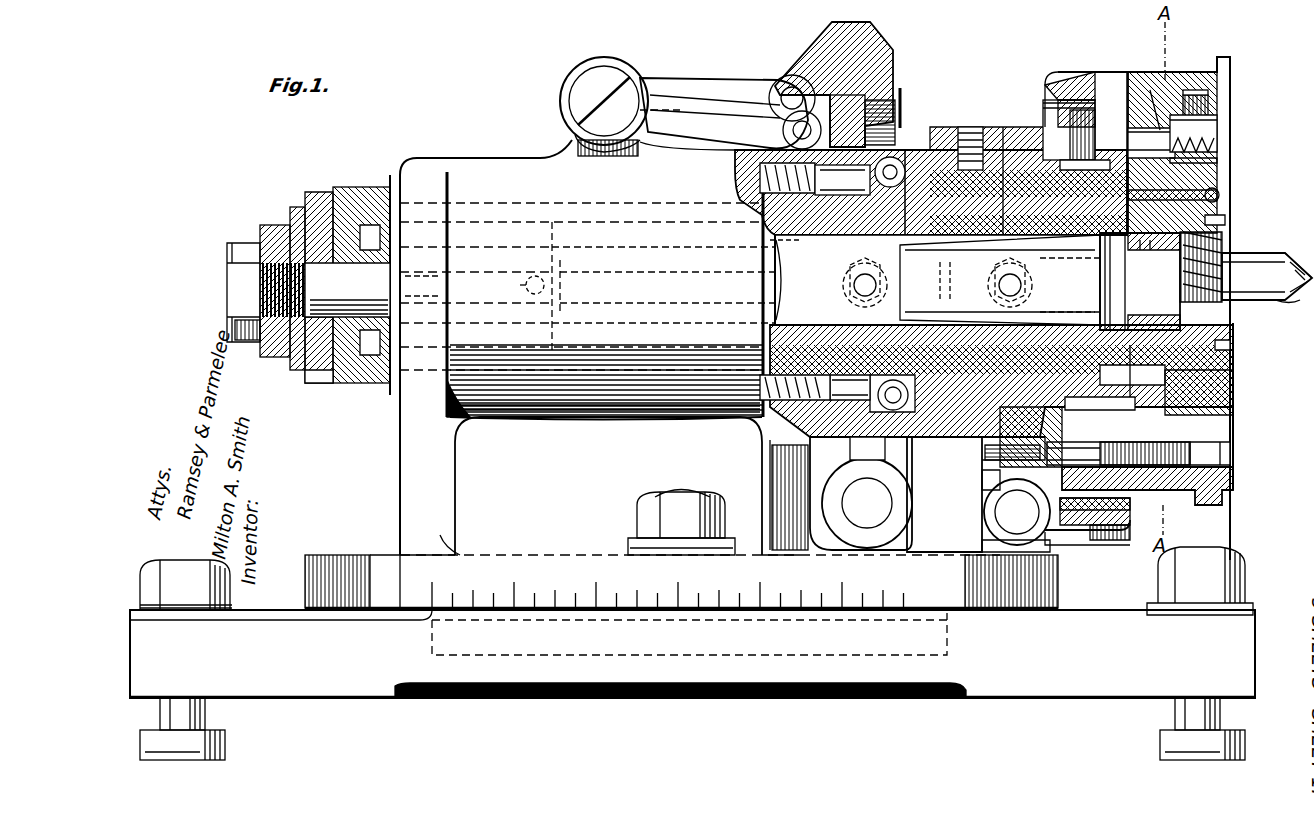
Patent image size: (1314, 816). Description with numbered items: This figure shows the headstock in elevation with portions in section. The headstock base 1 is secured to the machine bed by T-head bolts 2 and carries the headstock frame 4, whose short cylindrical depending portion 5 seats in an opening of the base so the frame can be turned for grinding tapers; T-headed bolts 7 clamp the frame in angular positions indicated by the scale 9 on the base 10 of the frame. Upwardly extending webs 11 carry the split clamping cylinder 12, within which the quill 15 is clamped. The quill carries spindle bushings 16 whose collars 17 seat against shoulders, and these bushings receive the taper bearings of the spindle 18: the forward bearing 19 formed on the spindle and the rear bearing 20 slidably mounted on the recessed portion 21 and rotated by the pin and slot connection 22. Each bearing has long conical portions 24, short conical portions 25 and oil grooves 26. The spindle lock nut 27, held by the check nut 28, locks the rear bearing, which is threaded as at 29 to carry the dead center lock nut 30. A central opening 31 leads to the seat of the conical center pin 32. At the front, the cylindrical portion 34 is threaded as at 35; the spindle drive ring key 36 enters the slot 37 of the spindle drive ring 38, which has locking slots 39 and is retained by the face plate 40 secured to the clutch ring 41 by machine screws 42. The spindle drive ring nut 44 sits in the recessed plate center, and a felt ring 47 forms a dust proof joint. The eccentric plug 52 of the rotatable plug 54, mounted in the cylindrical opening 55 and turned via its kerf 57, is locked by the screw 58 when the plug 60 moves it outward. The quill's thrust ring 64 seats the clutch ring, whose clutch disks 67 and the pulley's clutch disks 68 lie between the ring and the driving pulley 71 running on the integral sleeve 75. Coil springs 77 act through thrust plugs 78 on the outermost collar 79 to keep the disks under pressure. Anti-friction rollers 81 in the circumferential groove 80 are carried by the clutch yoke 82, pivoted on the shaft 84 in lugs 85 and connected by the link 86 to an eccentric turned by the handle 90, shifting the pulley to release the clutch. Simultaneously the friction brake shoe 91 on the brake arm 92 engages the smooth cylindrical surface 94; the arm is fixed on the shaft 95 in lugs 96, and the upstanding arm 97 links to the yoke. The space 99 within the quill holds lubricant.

The headstock base 1 is at (345, 695).
The T-head bolts 2 is at (190, 718).
The headstock frame 4 is at (470, 532).
The short cylindrical depending portion 5 is at (622, 655).
The T-headed bolts 7 is at (678, 492).
The scale 9 is at (537, 598).
The base of the headstock frame 10 is at (537, 560).
The upwardly extending webs 11 is at (405, 480).
The split clamping cylinder 12 is at (568, 410).
The quill 15 is at (965, 127).
The spindle bushings 16 is at (1043, 108).
The collars 17 is at (1130, 195).
The spindle 18 is at (937, 280).
The forward bearing 19 is at (1000, 280).
The rear bearing 20 is at (392, 385).
The recessed portion 21 is at (347, 290).
The pin and slot connection 22 is at (631, 286).
The long conical portions 24 is at (1035, 285).
The short conical portions 25 is at (1110, 248).
The oil grooves 26 is at (1105, 320).
The spindle lock nut 27 is at (295, 207).
The check nut 28 is at (240, 288).
The thread on rear bearing 29 is at (282, 225).
The dead center lock nut 30 is at (325, 383).
The central opening 31 is at (422, 288).
The conical center pin 32 is at (1262, 302).
The cylindrical portion 34 is at (1195, 262).
The threaded portion 35 is at (1215, 277).
The spindle drive ring key 36 is at (1175, 258).
The slot 37 is at (1156, 251).
The spindle drive ring 38 is at (1175, 380).
The locking slots 39 is at (1175, 402).
The face plate 40 is at (1210, 482).
The clutch ring 41 is at (1178, 490).
The machine screws 42 is at (1228, 453).
The spindle drive ring nut 44 is at (1215, 348).
The felt ring 47 is at (1220, 198).
The eccentric plug 52 is at (1146, 135).
The rotatable plug 54 is at (1215, 122).
The cylindrical opening 55 is at (1185, 95).
The kerf 57 is at (1222, 140).
The screw 58 is at (1225, 75).
The plug 60 is at (1100, 80).
The thrust ring 64 is at (1230, 418).
The clutch disks 67 is at (1060, 165).
The clutch disks 68 is at (1060, 88).
The driving pulley 71 is at (922, 435).
The integral sleeve 75 is at (998, 127).
The coil springs 77 is at (740, 180).
The thrust plugs 78 is at (840, 197).
The outermost collar 79 is at (895, 118).
The circumferential groove 80 is at (890, 190).
The anti-friction rollers 81 is at (893, 380).
The clutch yoke 82 is at (822, 55).
The shaft 84 is at (860, 512).
The lugs 85 is at (968, 565).
The link 86 is at (722, 92).
The handle 90 is at (660, 90).
The friction brake shoe 91 is at (1115, 540).
The brake arm 92 is at (1080, 545).
The smooth cylindrical surface 94 is at (1135, 518).
The shaft 95 is at (1005, 512).
The lugs 96 is at (990, 543).
The upstanding arm 97 is at (990, 475).
The space within the quill 99 is at (800, 233).